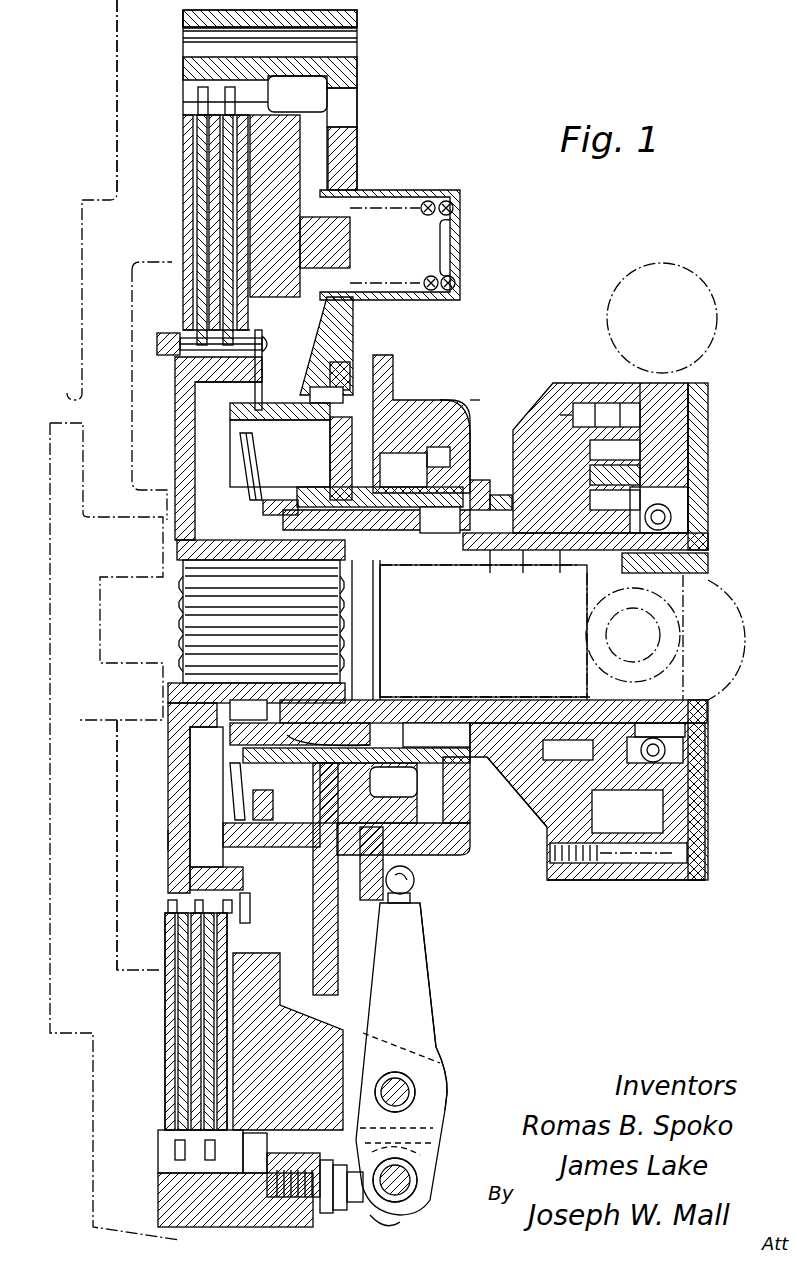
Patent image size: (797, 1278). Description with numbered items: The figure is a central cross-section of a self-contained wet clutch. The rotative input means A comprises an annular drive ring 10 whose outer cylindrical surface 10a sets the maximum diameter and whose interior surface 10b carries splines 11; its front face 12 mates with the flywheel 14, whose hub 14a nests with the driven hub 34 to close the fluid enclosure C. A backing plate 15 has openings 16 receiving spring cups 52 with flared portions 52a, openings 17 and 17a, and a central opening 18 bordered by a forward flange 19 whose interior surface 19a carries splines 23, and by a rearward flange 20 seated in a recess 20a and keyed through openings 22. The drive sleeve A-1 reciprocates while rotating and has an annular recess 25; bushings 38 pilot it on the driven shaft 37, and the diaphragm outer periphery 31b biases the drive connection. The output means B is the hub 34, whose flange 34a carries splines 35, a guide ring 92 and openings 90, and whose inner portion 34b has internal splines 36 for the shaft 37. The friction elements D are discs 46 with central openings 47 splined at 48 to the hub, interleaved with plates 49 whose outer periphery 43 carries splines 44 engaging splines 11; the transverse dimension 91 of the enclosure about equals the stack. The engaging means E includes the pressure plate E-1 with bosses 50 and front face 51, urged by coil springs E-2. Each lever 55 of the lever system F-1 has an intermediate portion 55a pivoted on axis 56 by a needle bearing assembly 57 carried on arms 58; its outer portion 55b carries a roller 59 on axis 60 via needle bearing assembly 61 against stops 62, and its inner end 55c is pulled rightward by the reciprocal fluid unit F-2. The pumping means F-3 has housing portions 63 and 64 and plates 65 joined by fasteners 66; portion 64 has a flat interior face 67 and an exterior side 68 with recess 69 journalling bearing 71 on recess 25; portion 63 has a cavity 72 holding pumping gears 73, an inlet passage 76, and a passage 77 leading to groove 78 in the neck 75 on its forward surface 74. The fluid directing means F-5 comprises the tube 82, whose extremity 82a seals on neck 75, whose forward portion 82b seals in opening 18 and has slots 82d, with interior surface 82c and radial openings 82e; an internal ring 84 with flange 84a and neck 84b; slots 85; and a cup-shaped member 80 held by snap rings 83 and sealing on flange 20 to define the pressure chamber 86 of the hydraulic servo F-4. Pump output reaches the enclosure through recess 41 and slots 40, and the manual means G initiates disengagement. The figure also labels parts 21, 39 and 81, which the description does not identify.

The rotative input means A is at (332, 15).
The annular drive ring 10 is at (357, 24).
The outer cylindrical surface 10a is at (190, 12).
The interior cylindrical surface 10b is at (262, 84).
The axially extending splines 11 is at (198, 90).
The front flat face 12 is at (183, 68).
The flywheel 14 is at (117, 45).
The hub of the flywheel 14a is at (80, 720).
The backing plate 15 is at (357, 163).
The circumferentially spaced openings 16 is at (362, 192).
The circumferentially spaced openings 17 is at (340, 1010).
The openings 17a is at (357, 95).
The central opening 18 is at (385, 487).
The forward flange 19 is at (185, 400).
The interior surface 19a is at (305, 425).
The rearwardly extending flange 20 is at (420, 425).
The recess 20a is at (348, 362).
The pin 21 is at (343, 397).
The openings 22 is at (348, 417).
The splines 23 is at (235, 425).
The annular recess 25 is at (672, 525).
The outer periphery of the diaphragm 31b is at (245, 445).
The hub 34 is at (170, 775).
The hub flange 34a is at (175, 330).
The radially inner portion 34b is at (230, 545).
The splines 35 is at (250, 904).
The internal splines 36 is at (190, 601).
The driven shaft 37 is at (720, 665).
The bushings 38 is at (710, 563).
The wall 39 is at (355, 680).
The slots 40 is at (273, 780).
The annular recess 41 is at (382, 690).
The outer periphery 43 is at (200, 1160).
The splines 44 is at (175, 1150).
The friction discs 46 is at (185, 294).
The central opening 47 is at (170, 917).
The splines 48 is at (168, 898).
The friction plates 49 is at (180, 1032).
The bosses 50 is at (351, 240).
The front face 51 is at (245, 222).
The spring cups 52 is at (440, 190).
The flared portion 52a is at (455, 228).
The lever 55 is at (447, 958).
The intermediate portion 55a is at (445, 1065).
The outer portion 55b is at (440, 1152).
The inner end 55c is at (416, 880).
The axis 56 is at (410, 1090).
The needle bearing assembly 57 is at (410, 1105).
The arms 58 is at (335, 1170).
The rollable member 59 is at (385, 1222).
The axis 60 is at (417, 1180).
The needle bearing assembly 61 is at (410, 1195).
The stops 62 is at (352, 1205).
The housing portion 63 is at (525, 428).
The housing portion 64 is at (710, 803).
The plates 65 is at (705, 480).
The fasteners 66 is at (583, 403).
The interior face 67 is at (635, 492).
The exterior side 68 is at (710, 825).
The annular recess 69 is at (685, 760).
The bearing 71 is at (690, 730).
The interior cavity 72 is at (630, 440).
The pumping gears 73 is at (530, 810).
The forward outer surface 74 is at (562, 572).
The annular neck 75 is at (475, 770).
The passage 76 is at (635, 470).
The passage 77 is at (532, 572).
The annular groove 78 is at (568, 750).
The cup-shaped member 80 is at (470, 440).
The cavity 81 is at (406, 521).
The tubular member 82 is at (290, 525).
The extremity 82a is at (495, 495).
The forward portion 82b is at (310, 487).
The interior cylindrical surface 82c is at (410, 745).
The slots 82d is at (248, 710).
The radially directed openings 82e is at (475, 480).
The snap rings 83 is at (470, 810).
The internal ring 84 is at (471, 713).
The flange 84a is at (470, 742).
The neck 84b is at (515, 700).
The slots 85 is at (499, 572).
The pressure chamber 86 is at (438, 457).
The openings 90 is at (190, 878).
The transverse dimension 91 is at (191, 383).
The ring 92 is at (240, 380).
The rotative output means B is at (157, 836).
The fluid enclosure C is at (206, 797).
The friction elements D is at (271, 162).
The engaging means E is at (473, 211).
The pressure plate E-1 is at (300, 125).
The coil springs E-2 is at (455, 270).
The manually operated means G is at (723, 375).
The drive sleeve A-1 is at (502, 695).
The lever system F-1 is at (447, 992).
The reciprocal fluid unit F-2 is at (595, 903).
The fluid pumping means F-3 is at (700, 445).
The hydraulic servo means F-4 is at (456, 390).
The fluid directing means F-5 is at (483, 631).